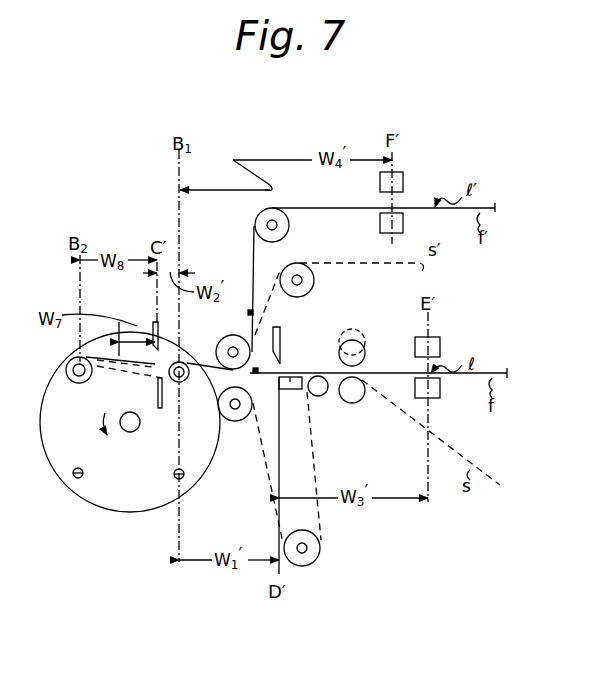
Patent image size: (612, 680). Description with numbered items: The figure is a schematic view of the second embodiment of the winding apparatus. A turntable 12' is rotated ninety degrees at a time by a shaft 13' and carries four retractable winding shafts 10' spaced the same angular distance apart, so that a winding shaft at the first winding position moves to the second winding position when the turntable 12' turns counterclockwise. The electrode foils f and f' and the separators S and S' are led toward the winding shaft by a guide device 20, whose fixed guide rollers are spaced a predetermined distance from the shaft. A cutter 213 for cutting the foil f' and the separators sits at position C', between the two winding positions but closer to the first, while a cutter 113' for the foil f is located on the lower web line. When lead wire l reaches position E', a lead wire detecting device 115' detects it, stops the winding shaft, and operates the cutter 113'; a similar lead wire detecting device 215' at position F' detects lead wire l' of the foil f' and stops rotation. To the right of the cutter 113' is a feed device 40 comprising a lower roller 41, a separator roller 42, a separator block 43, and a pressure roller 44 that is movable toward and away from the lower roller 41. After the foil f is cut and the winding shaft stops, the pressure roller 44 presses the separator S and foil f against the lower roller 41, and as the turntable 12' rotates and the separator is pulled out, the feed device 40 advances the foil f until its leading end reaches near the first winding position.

The retractable winding shaft 10' is at (114, 498).
The turntable 12' is at (130, 439).
The shaft 13' is at (131, 443).
The guide device 20 is at (238, 430).
The feed device 40 is at (349, 413).
The lower roller 41 is at (360, 402).
The separator roller 42 is at (320, 396).
The separator block 43 is at (290, 390).
The pressure roller 44 is at (364, 360).
The cutter 113' is at (312, 332).
The lead wire detecting device 115' is at (466, 354).
The cutter 213 is at (149, 320).
The sensor 215' is at (431, 188).